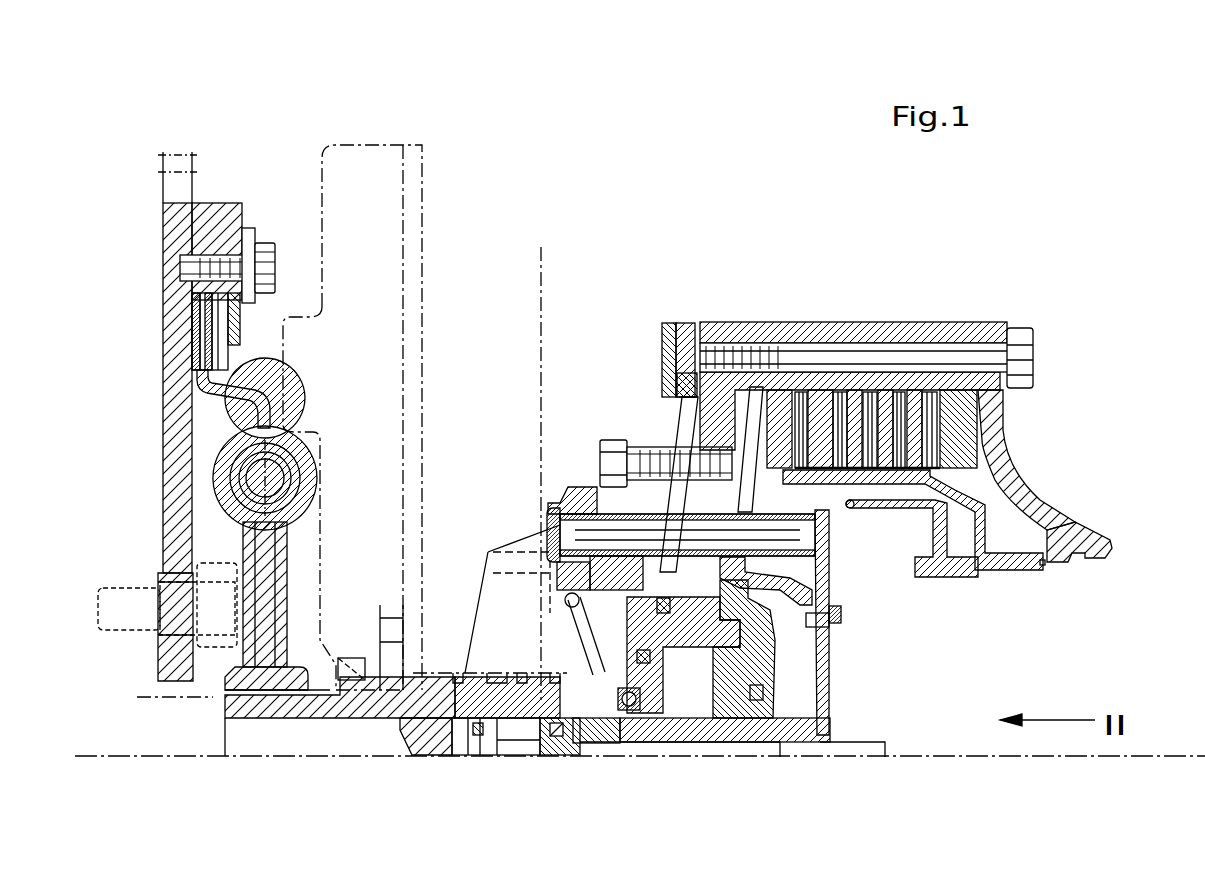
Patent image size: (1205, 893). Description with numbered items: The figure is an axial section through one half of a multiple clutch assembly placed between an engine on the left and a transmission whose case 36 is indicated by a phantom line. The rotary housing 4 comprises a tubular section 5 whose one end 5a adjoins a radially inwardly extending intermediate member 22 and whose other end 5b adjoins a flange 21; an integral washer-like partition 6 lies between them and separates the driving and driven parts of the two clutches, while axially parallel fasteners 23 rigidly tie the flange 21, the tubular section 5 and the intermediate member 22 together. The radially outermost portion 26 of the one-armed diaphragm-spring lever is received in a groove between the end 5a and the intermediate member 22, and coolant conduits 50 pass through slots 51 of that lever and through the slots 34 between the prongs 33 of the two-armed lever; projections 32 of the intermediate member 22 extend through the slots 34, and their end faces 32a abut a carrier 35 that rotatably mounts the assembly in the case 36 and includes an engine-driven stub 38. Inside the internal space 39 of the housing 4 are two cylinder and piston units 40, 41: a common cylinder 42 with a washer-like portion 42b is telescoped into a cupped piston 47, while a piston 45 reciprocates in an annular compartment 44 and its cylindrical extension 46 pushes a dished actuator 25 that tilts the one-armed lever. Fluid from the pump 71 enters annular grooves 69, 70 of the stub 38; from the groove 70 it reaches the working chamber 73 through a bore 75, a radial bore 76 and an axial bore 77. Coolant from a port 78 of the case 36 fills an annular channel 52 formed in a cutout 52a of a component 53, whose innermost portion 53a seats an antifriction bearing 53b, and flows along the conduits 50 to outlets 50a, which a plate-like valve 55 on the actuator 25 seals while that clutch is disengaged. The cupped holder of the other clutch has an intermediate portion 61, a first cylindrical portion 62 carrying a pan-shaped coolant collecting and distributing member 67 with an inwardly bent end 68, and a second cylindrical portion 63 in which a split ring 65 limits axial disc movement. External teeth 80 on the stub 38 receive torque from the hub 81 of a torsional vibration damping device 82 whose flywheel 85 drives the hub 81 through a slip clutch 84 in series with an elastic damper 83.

The pump 71 is at (356, 168).
The case 36 is at (541, 265).
The end faces of projections 32a is at (642, 440).
The prongs of the lever 33 is at (699, 402).
The slots 34 is at (700, 335).
The end of tubular section 5a is at (757, 345).
The housing 4 is at (804, 346).
The tubular section 5 is at (800, 340).
The projections 32 is at (673, 322).
The intermediate member 22 is at (725, 325).
The radially outermost portion of the lever 26 is at (767, 395).
The slots of the lever 51 is at (853, 430).
The partition 6 is at (868, 400).
The fasteners 23 is at (962, 355).
The end of tubular section 5b is at (992, 325).
The flywheel 85 is at (217, 237).
The slip clutch 84 is at (193, 318).
The torsional vibration damping device 82 is at (157, 410).
The elastic damper 83 is at (290, 478).
The split ring 65 is at (932, 433).
The second cylindrical portion 63 is at (933, 457).
The flange 21 is at (990, 450).
The first cylindrical portion 62 is at (930, 490).
The coolant collecting and distributing member 67 is at (980, 503).
The component 53 is at (572, 490).
The intermediate portion 61 is at (975, 537).
The radially inwardly bent end portion 68 is at (852, 507).
The outlets of the conduits 50a is at (1040, 568).
The conduits 50 is at (977, 577).
The plate-like valve 55 is at (815, 575).
The cupped piston 47 is at (842, 612).
The internal space 39 is at (838, 622).
The hub 81 is at (252, 672).
The external teeth 80 is at (322, 690).
The actuator 25 is at (833, 678).
The carrier 35 is at (340, 748).
The stub 38 is at (410, 707).
The annular channel 52 is at (490, 735).
The annular cutout 52a is at (467, 680).
The annular groove 69 is at (498, 680).
The annular groove 70 is at (543, 693).
The axially parallel bore 75 is at (593, 693).
The coolant supplying port 78 is at (628, 705).
The radially innermost portion of the component 53a is at (613, 705).
The antifriction bearing 53b is at (560, 720).
The radially outwardly extending bore 76 is at (655, 735).
The piston 45 is at (732, 765).
The cylindrical extension 46 is at (702, 727).
The cylinder and piston unit 41 is at (718, 708).
The annular compartment 44 is at (697, 685).
The cylinder 42 is at (798, 708).
The radially inwardly extending portion 42b is at (788, 738).
The axially parallel bore 77 is at (790, 700).
The cylinder and piston unit 40 is at (801, 777).
The working chamber 73 is at (835, 725).